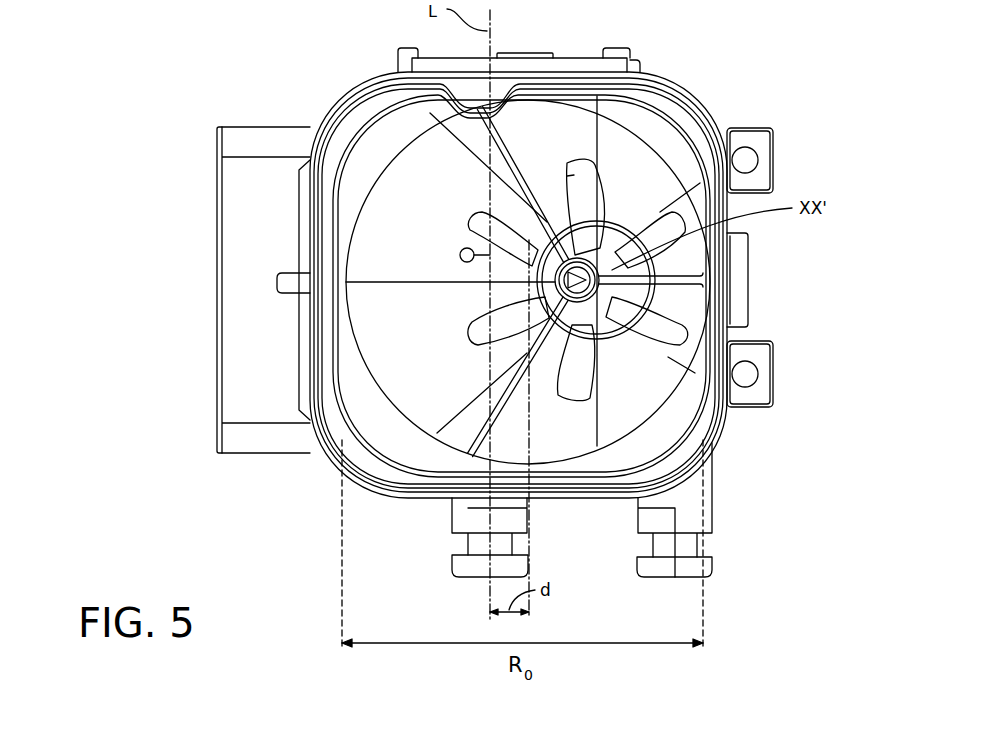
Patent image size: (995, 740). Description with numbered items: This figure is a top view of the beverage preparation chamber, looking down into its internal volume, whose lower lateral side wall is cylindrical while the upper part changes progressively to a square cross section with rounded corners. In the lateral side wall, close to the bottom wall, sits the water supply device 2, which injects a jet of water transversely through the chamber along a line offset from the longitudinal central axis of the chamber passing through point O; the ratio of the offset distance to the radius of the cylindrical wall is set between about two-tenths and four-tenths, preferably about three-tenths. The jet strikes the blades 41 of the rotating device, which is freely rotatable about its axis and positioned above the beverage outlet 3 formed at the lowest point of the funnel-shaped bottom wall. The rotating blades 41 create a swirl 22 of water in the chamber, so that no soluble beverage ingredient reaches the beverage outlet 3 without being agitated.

The water supply device 2 is at (464, 553).
The swirl 22 is at (543, 123).
The beverage outlet 3 is at (638, 214).
The blades 41 is at (586, 186).